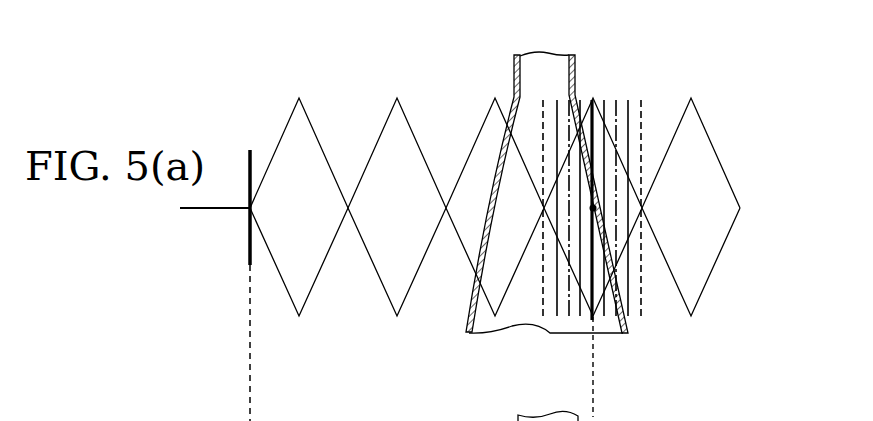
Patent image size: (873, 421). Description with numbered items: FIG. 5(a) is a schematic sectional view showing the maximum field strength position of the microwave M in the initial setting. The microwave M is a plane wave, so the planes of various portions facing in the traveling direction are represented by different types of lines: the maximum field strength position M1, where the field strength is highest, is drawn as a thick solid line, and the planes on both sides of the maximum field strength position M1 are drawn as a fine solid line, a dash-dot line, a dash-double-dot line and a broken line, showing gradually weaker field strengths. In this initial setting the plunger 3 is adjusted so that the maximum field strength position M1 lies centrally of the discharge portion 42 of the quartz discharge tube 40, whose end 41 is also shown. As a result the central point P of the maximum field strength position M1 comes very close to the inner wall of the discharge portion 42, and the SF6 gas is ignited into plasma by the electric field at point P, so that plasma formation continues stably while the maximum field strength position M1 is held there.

The plunger 3 is at (250, 150).
The tapered light guide 40 is at (623, 209).
The exit end of light guide 41 is at (627, 334).
The discharge portion 42 is at (614, 288).
The microwave M is at (723, 167).
The maximum field strength position M1 is at (582, 95).
The central point P is at (596, 208).